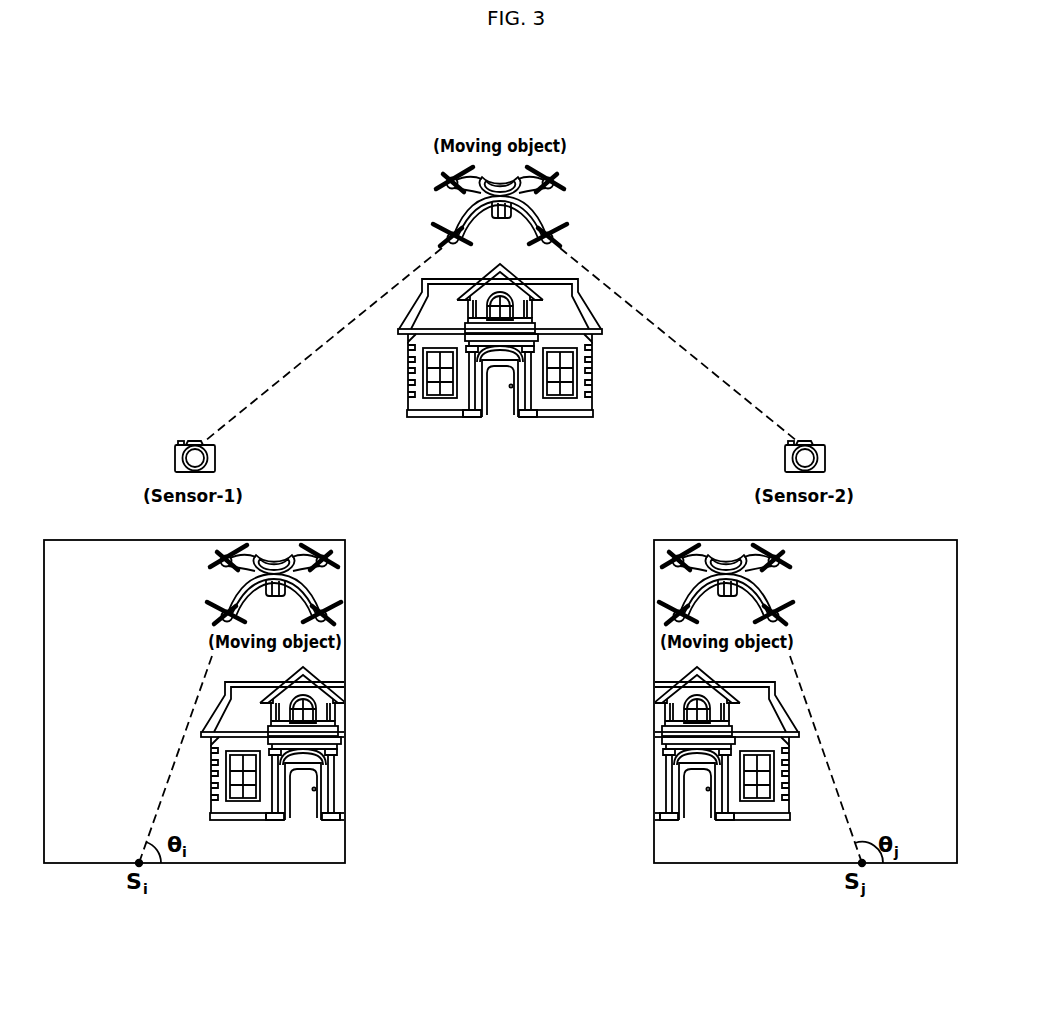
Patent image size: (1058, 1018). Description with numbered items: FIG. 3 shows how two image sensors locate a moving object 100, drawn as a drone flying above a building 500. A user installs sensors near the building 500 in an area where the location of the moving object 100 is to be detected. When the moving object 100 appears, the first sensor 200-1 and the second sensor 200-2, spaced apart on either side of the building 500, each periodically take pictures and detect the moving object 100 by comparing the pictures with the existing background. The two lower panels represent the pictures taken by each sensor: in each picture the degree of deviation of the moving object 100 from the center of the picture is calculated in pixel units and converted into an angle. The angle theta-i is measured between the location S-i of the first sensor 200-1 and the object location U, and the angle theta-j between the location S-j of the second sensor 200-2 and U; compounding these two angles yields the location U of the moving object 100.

The moving object 100 is at (546, 192).
The building 500 is at (593, 386).
The sensor-1 200-1 is at (216, 458).
The sensor-2 200-2 is at (826, 458).